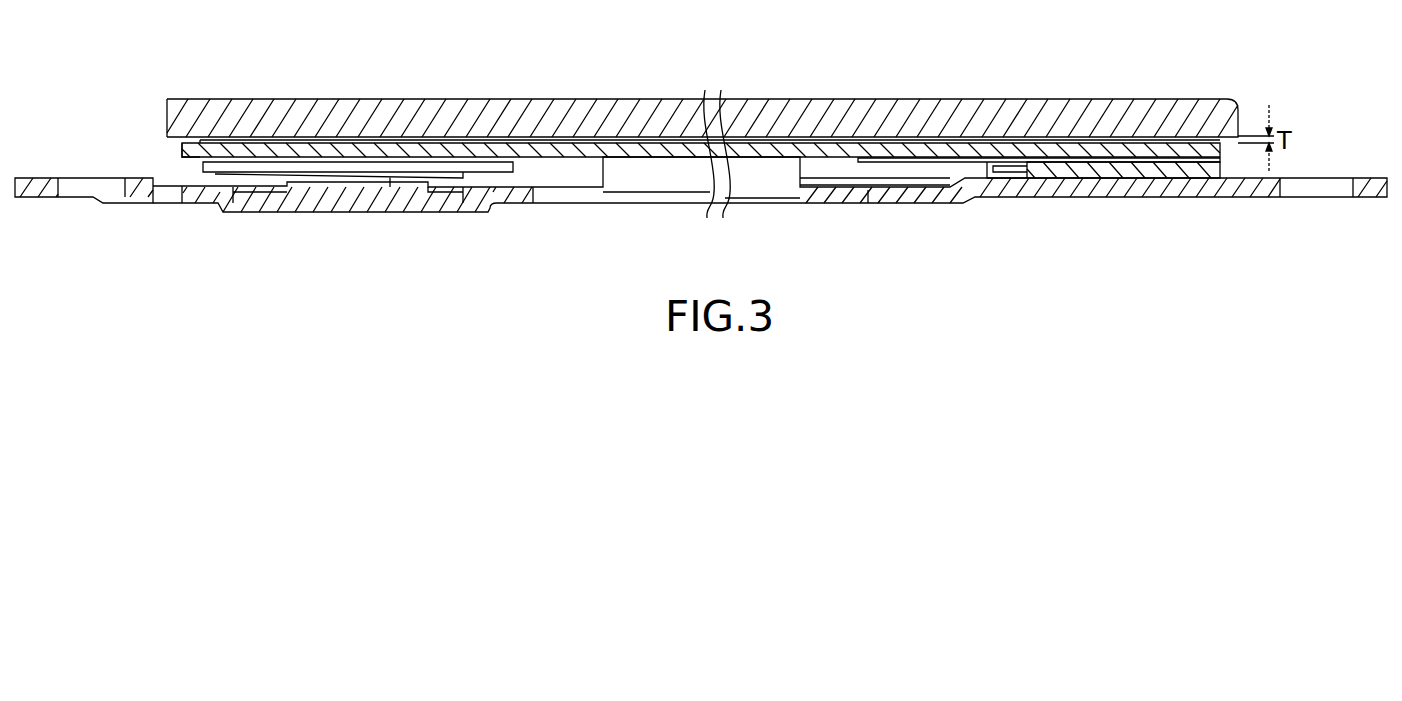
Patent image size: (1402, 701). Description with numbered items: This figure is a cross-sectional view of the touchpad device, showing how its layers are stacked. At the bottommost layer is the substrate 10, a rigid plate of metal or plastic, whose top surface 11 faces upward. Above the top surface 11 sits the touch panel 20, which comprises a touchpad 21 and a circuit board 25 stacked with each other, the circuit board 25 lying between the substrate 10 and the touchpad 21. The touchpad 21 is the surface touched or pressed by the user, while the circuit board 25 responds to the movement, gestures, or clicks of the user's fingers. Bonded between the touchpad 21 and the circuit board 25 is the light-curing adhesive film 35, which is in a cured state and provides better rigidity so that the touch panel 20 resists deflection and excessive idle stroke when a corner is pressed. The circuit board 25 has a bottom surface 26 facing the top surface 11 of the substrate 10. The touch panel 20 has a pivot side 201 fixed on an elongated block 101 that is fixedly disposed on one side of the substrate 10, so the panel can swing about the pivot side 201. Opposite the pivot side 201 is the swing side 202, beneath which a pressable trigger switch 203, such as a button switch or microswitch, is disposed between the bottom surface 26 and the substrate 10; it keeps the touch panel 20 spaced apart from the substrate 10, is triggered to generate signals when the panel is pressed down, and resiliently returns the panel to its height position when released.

The substrate 10 is at (920, 193).
The elongated block 101 is at (1127, 166).
The top surface 11 is at (911, 190).
The touch panel 20 is at (1192, 46).
The touchpad 21 is at (1175, 112).
The pivot side 201 is at (1240, 108).
The swing side 202 is at (167, 110).
The pressable trigger switch 203 is at (363, 178).
The circuit board 25 is at (1125, 160).
The bottom surface 26 is at (182, 160).
The light-curing adhesive film 35 is at (1076, 150).